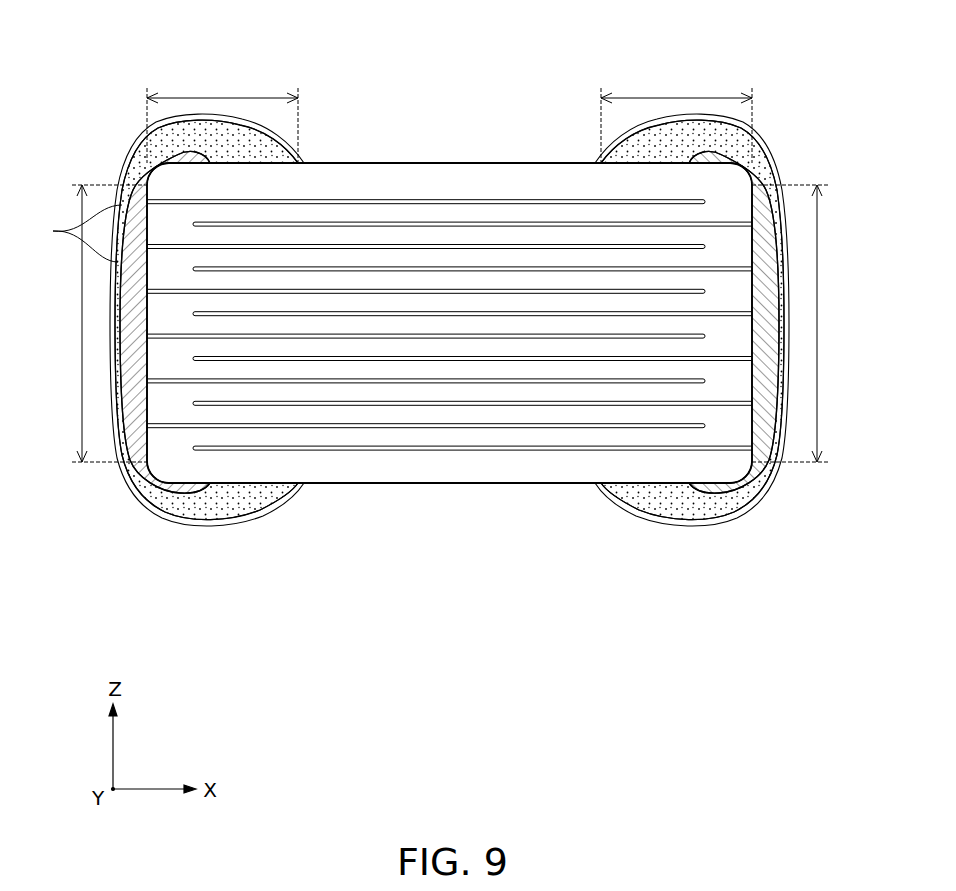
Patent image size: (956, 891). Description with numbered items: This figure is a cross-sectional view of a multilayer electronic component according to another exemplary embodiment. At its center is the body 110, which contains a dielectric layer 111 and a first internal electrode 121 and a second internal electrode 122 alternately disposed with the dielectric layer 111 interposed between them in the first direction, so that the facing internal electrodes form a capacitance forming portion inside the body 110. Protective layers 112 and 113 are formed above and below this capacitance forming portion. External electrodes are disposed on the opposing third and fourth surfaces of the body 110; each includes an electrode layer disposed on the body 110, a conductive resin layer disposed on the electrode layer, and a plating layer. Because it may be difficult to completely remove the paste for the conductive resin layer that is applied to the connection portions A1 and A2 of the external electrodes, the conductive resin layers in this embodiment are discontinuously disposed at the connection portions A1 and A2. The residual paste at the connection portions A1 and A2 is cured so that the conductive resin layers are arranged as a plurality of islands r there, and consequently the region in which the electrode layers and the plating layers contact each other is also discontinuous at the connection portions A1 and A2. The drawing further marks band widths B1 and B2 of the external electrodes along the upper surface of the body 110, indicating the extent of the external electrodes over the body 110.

The body 110 is at (497, 152).
The dielectric layer 111 is at (440, 210).
The protective layer 112 is at (542, 182).
The protective layer 113 is at (440, 475).
The first internal electrode 121 is at (335, 200).
The second internal electrode 122 is at (383, 222).
The connection portion A1 is at (94, 323).
The connection portion A2 is at (805, 323).
The band width of first external electrode B1 is at (222, 113).
The band width of second external electrode B2 is at (676, 113).
The island r is at (80, 233).